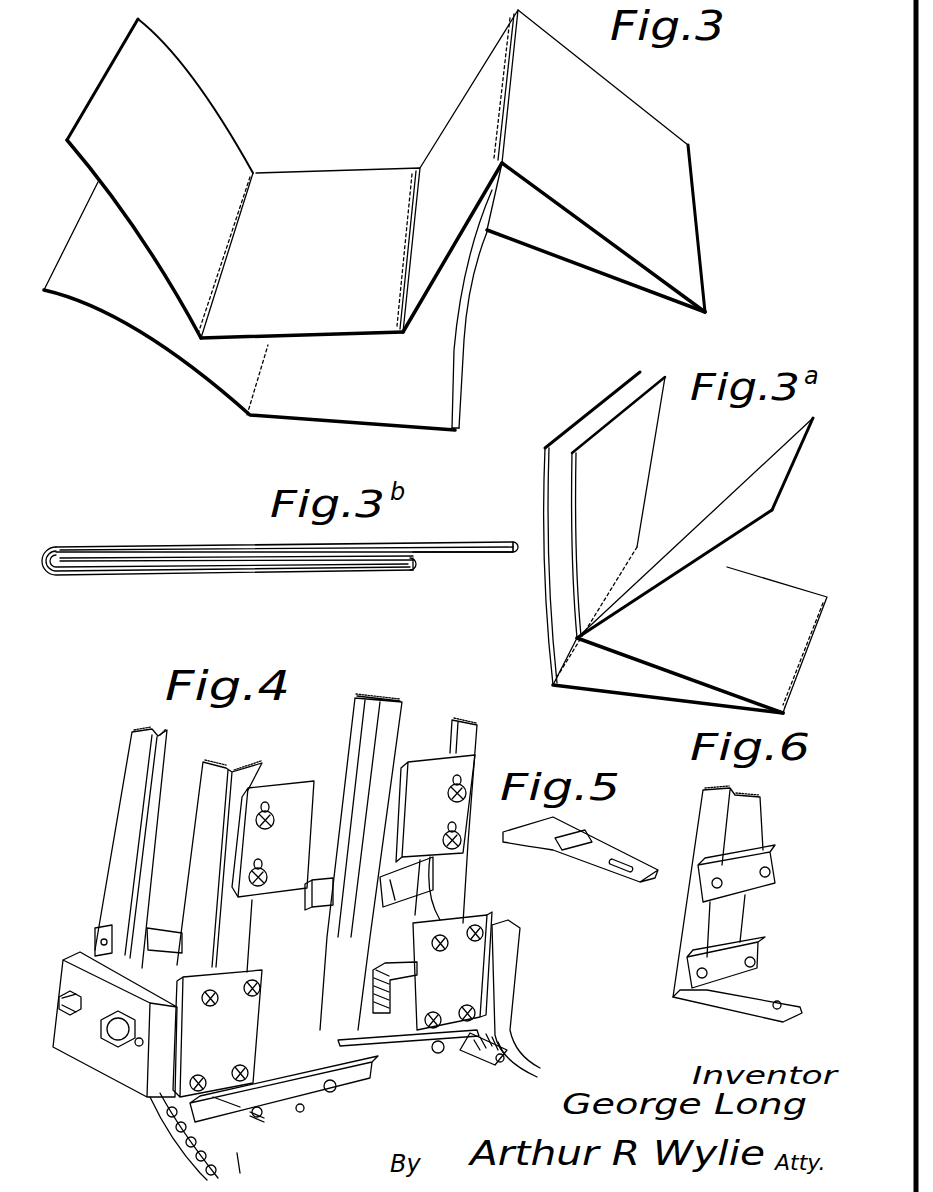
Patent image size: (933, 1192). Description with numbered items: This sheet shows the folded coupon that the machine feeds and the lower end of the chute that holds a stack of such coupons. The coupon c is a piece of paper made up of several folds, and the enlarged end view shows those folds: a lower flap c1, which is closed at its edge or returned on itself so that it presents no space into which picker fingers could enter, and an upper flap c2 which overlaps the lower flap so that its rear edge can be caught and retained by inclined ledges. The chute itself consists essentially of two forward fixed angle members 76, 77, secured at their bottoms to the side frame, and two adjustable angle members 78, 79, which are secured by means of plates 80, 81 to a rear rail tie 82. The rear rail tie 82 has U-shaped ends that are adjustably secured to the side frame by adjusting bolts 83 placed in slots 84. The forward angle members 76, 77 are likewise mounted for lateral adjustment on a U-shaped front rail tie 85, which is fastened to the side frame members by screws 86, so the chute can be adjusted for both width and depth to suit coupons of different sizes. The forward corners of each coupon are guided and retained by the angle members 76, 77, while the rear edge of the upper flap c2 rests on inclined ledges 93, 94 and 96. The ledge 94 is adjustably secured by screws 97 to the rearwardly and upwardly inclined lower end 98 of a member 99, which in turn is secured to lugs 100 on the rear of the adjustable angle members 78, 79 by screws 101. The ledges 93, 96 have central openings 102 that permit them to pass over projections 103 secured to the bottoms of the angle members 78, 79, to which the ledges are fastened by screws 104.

In FIG. 3, the coupon c is at (343, 162).
In FIG. 3A, the coupon c is at (548, 620).
In FIG. 3B, the coupon c is at (171, 543).
In FIG. 3A, the lower flap c1 is at (813, 608).
In FIG. 3B, the lower flap c1 is at (397, 575).
In FIG. 3B, the upper flap c2 is at (481, 541).
In FIG. 4, the forward fixed angle member 76 is at (158, 750).
In FIG. 4, the forward fixed angle member 77 is at (380, 713).
In FIG. 4, the adjustable angle member 78 is at (253, 762).
In FIG. 6, the adjustable angle member 78 is at (750, 815).
In FIG. 4, the adjustable angle member 79 is at (475, 733).
In FIG. 4, the plate 80 is at (217, 1033).
In FIG. 4, the plate 81 is at (452, 971).
In FIG. 4, the rear rail tie 82 is at (284, 1094).
In FIG. 4, the adjusting bolt 83 is at (112, 1035).
In FIG. 4, the slot 84 is at (137, 1037).
In FIG. 4, the front rail tie 85 is at (165, 945).
In FIG. 4, the screw 86 is at (85, 945).
In FIG. 5, the inclined ledge 93 is at (557, 827).
In FIG. 4, the inclined ledge 94 is at (362, 1038).
In FIG. 4, the inclined ledge 96 is at (165, 1100).
In FIG. 4, the screw 97 is at (437, 1053).
In FIG. 4, the inclined lower end 98 is at (372, 1040).
In FIG. 4, the member 99 is at (314, 908).
In FIG. 4, the lug 100 is at (238, 843).
In FIG. 4, the screw 101 is at (455, 830).
In FIG. 5, the central opening 102 is at (583, 843).
In FIG. 4, the projection 103 is at (264, 1114).
In FIG. 6, the projection 103 is at (763, 997).
In FIG. 4, the screw 104 is at (468, 1055).